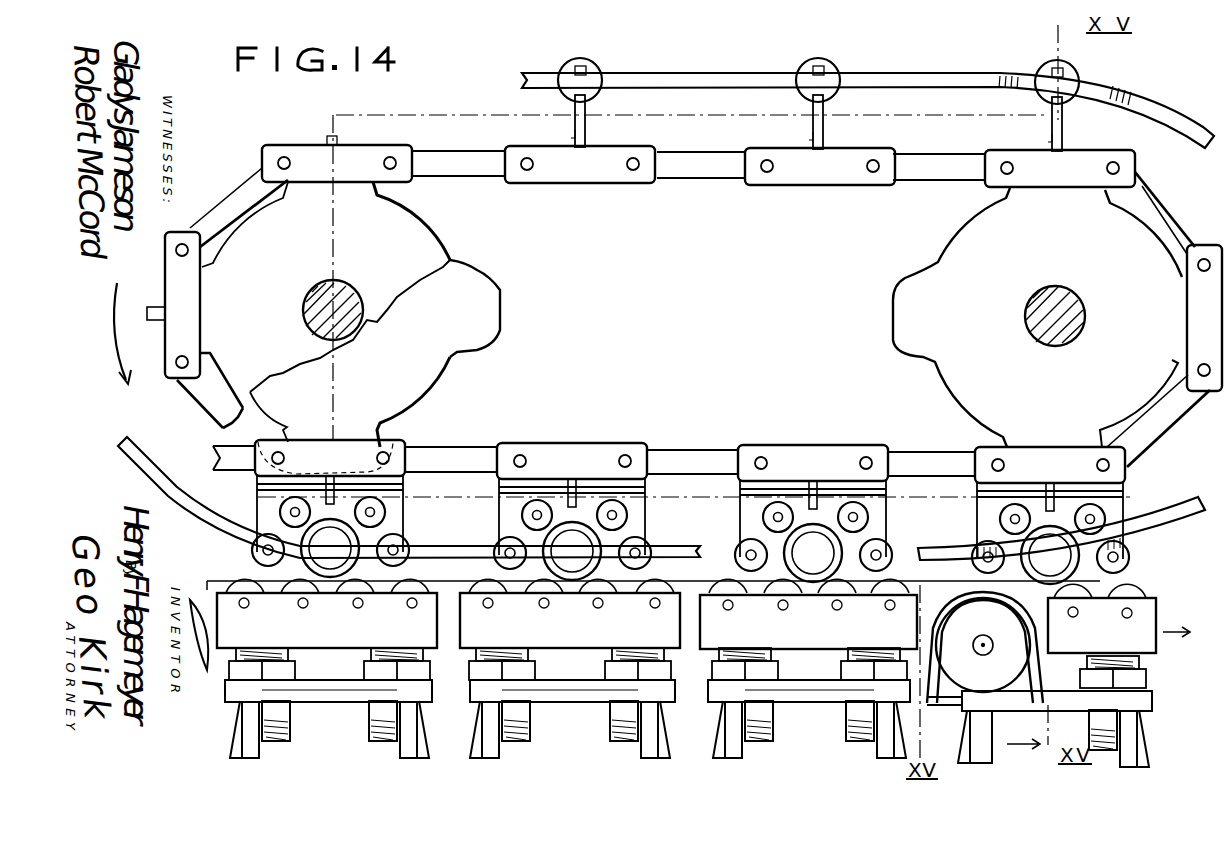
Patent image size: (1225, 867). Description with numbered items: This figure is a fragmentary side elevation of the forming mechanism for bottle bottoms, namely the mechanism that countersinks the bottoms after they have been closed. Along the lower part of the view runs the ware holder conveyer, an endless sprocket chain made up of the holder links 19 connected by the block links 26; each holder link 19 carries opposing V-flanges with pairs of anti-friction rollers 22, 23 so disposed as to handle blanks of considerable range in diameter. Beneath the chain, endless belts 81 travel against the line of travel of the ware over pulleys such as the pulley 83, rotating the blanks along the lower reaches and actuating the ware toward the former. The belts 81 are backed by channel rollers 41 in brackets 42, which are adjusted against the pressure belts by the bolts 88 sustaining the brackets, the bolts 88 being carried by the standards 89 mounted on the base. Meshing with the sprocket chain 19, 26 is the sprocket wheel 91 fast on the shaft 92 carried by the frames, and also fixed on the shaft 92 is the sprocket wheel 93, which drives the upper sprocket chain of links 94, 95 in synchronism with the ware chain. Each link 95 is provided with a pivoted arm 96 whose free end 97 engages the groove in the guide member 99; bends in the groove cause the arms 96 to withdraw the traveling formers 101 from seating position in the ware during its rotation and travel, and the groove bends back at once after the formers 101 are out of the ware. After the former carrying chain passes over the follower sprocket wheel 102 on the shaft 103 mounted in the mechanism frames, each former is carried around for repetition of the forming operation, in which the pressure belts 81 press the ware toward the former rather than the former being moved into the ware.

The holder link 19 is at (255, 472).
The anti-friction rollers 22 is at (867, 553).
The anti-friction rollers 23 is at (1067, 518).
The block link 26 is at (432, 446).
The channel rollers 41 is at (1110, 597).
The brackets 42 is at (1157, 613).
The endless belts 81 is at (1103, 580).
The pulley 83 is at (210, 672).
The bolts 88 is at (1140, 662).
The standards 89 is at (1148, 727).
The sprocket wheel 91 is at (447, 385).
The shaft 92 is at (360, 318).
The sprocket wheel 93 is at (438, 232).
The sprocket chain link 94 is at (480, 445).
The link 95 is at (548, 442).
The pivoted arm 96 is at (580, 493).
The free end 97 is at (573, 557).
The guide member 99 is at (1188, 508).
The traveling former 101 is at (602, 66).
The follower sprocket wheel 102 is at (893, 306).
The shaft 103 is at (1032, 292).